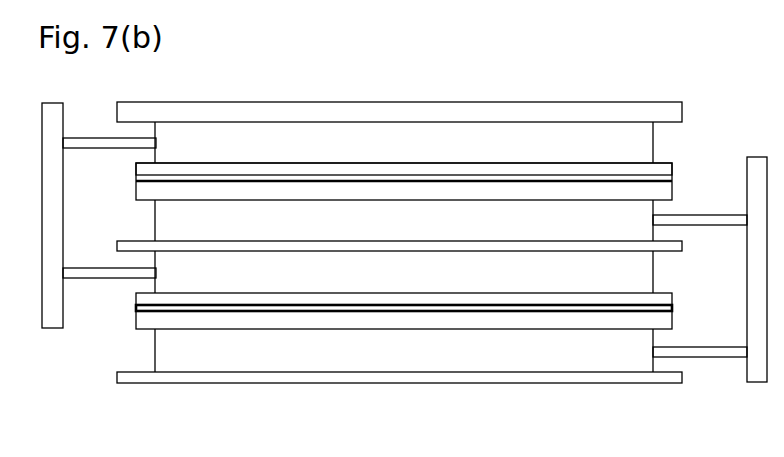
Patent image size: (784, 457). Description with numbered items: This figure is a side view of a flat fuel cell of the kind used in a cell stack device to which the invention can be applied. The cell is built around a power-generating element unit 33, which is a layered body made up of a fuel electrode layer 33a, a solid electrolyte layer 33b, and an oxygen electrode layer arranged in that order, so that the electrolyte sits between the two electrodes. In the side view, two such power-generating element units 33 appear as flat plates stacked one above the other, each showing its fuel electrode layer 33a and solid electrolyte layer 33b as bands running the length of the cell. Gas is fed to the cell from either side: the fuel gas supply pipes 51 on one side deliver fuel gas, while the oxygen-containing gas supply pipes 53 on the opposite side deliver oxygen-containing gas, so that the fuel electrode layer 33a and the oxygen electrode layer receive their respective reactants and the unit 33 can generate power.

The power-generating element unit 33 is at (427, 126).
The fuel electrode layer 33a is at (672, 322).
The solid electrolyte layer 33b is at (557, 305).
The fuel gas supply pipes 51 is at (710, 357).
The oxygen-containing gas supply pipes 53 is at (110, 278).